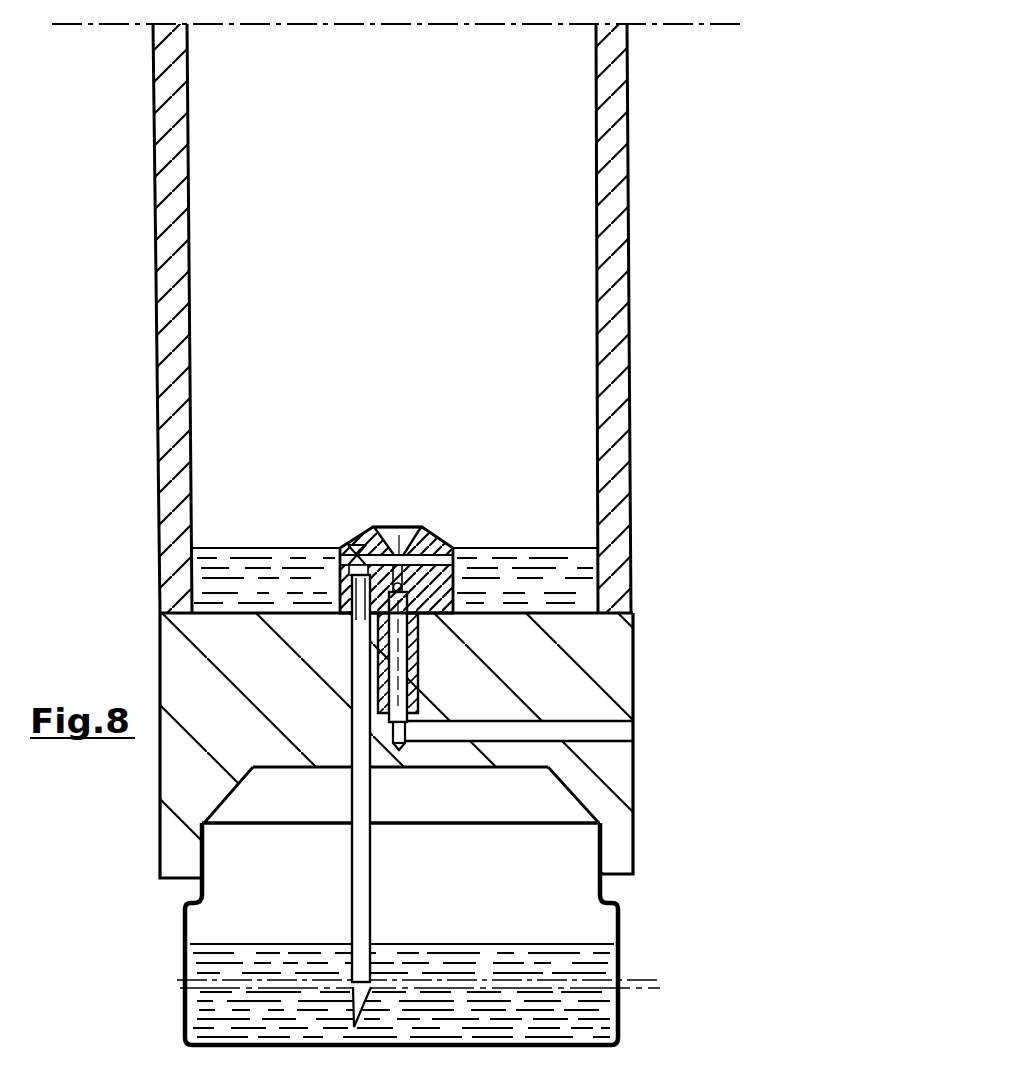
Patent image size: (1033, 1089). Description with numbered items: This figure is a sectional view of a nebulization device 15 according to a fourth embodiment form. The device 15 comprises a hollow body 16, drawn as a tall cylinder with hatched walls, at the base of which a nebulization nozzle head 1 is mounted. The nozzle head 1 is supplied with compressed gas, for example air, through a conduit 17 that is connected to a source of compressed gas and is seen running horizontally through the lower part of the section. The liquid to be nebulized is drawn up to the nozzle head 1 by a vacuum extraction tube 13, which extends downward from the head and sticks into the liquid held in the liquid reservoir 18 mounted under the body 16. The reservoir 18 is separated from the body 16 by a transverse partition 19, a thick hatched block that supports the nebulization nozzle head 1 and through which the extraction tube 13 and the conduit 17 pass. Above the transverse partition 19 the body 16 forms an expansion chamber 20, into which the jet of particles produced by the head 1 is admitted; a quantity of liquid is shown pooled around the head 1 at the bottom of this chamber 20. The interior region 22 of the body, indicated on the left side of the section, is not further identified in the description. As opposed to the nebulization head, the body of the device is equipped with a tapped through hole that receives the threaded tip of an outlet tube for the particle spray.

The nebulization nozzle head 1 is at (456, 555).
The vacuum extraction tube 13 is at (363, 797).
The nebulization device 15 is at (632, 251).
The hollow body 16 is at (613, 423).
The conduit 17 is at (605, 730).
The liquid reservoir 18 is at (620, 957).
The transverse partition 19 is at (617, 687).
The expansion chamber 20 is at (450, 425).
The cylinder interior 22 is at (223, 342).